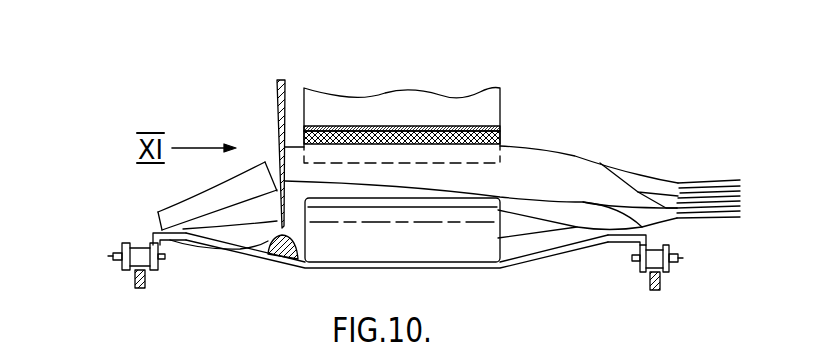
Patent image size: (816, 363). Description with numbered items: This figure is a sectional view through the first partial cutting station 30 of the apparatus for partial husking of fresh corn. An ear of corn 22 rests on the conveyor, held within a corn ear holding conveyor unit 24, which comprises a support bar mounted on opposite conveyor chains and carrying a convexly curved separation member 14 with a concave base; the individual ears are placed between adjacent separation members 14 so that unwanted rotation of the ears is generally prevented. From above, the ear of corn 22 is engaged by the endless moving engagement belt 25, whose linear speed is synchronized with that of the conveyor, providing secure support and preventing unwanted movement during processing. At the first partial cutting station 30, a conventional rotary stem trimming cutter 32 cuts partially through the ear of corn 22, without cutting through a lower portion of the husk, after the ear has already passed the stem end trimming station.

The separation member 14 is at (428, 257).
The ear of corn 22 is at (578, 168).
The corn ear holding conveyor unit 24 is at (518, 270).
The engagement belt 25 is at (488, 117).
The first partial cutting station 30 is at (433, 103).
The rotary stem trimming cutter 32 is at (277, 112).